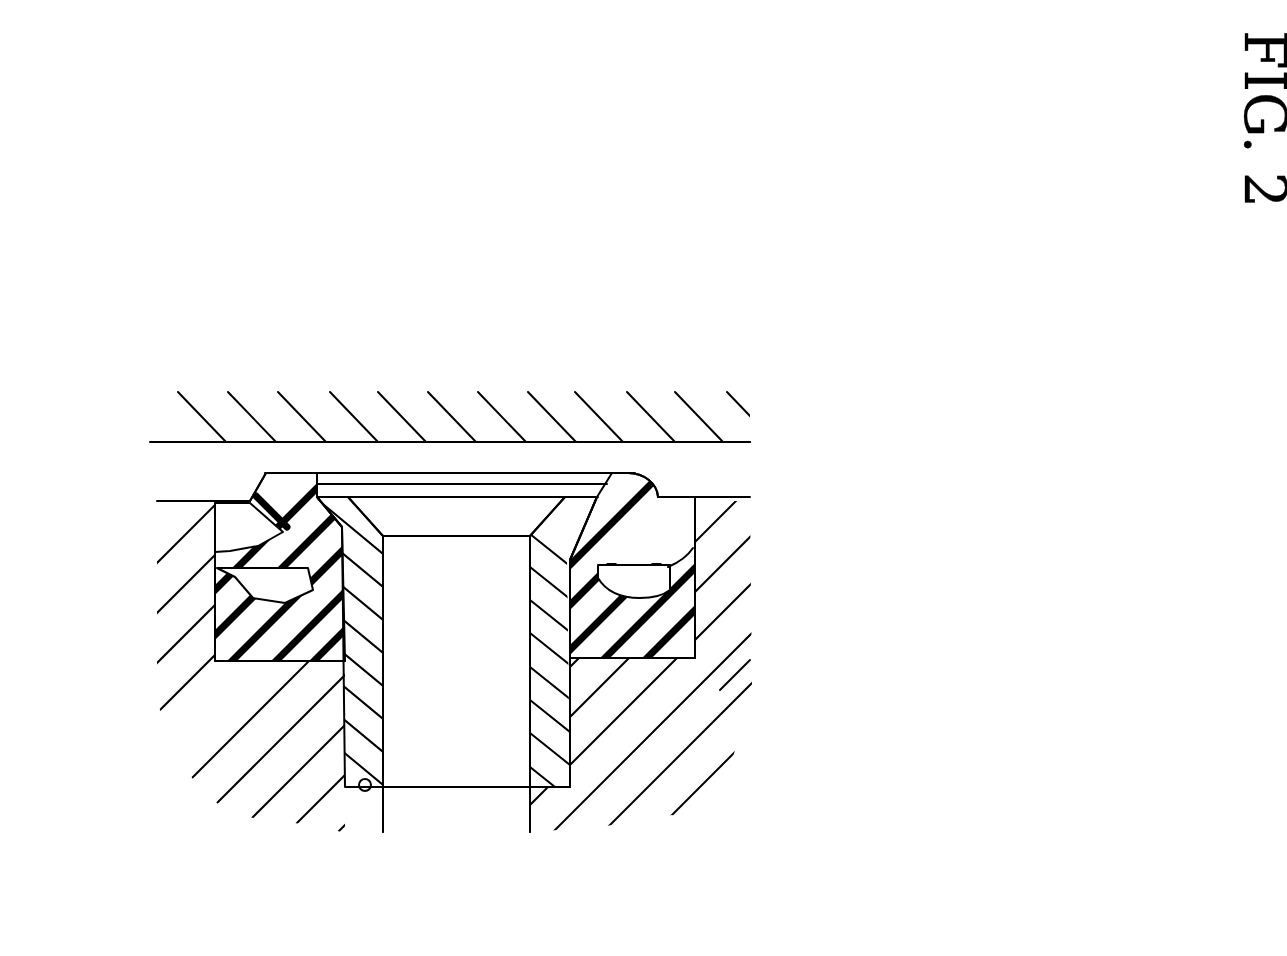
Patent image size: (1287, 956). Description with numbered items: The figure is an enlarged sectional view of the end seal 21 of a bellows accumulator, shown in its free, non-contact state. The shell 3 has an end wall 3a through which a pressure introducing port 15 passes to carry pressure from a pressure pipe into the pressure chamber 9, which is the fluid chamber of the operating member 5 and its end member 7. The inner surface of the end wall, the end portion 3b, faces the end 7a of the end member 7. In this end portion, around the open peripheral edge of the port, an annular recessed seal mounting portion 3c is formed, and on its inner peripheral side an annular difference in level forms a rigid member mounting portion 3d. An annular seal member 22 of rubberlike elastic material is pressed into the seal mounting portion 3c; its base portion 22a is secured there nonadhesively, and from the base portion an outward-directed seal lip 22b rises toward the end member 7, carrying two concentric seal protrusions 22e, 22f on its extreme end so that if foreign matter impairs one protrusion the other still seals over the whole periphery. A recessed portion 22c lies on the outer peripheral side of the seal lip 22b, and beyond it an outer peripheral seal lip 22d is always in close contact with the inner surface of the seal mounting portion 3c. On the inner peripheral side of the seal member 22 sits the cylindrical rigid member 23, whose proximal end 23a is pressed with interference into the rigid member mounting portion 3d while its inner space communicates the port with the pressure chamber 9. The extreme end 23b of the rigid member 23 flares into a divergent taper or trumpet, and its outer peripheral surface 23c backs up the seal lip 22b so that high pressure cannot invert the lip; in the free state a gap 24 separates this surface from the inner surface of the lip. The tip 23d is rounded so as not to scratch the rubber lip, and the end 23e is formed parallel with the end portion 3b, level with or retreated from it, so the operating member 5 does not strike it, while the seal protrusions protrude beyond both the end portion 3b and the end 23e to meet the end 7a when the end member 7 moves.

The shell 3 is at (720, 688).
The end wall 3a is at (688, 728).
The end portion 3b is at (170, 503).
The seal mounting portion 3c is at (215, 647).
The rigid member mounting portion 3d is at (365, 790).
The operating member 5 is at (207, 395).
The end member 7 is at (173, 408).
The end of the end member 7a is at (172, 448).
The pressure chamber 9 is at (170, 474).
The pressure introducing port 15 is at (478, 807).
The end seal 21 is at (618, 492).
The seal member 22 is at (695, 600).
The base portion 22a is at (637, 650).
The seal lip 22b is at (640, 477).
The recessed portion 22c is at (640, 583).
The outer peripheral seal lip 22d is at (697, 547).
The seal protrusion 22e is at (266, 482).
The seal protrusion 22f is at (302, 486).
The rigid member 23 is at (373, 717).
The proximal end 23a is at (557, 772).
The extreme end 23b is at (560, 513).
The outer peripheral surface 23c is at (598, 520).
The tip 23d is at (322, 496).
The end of the extreme end 23e is at (343, 493).
The gap 24 is at (213, 550).